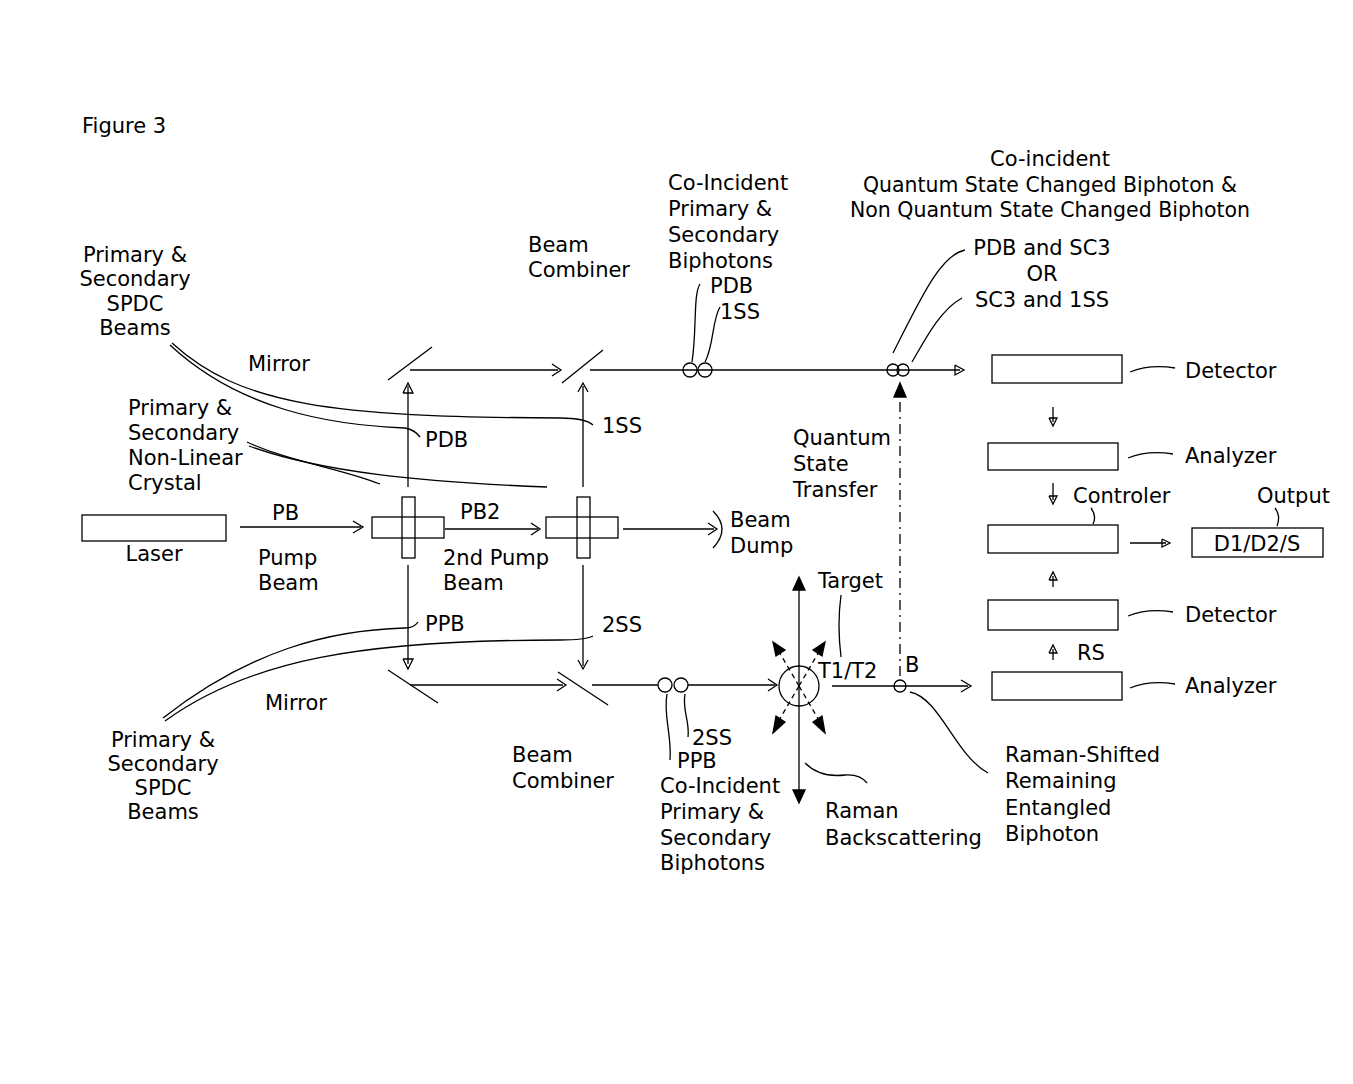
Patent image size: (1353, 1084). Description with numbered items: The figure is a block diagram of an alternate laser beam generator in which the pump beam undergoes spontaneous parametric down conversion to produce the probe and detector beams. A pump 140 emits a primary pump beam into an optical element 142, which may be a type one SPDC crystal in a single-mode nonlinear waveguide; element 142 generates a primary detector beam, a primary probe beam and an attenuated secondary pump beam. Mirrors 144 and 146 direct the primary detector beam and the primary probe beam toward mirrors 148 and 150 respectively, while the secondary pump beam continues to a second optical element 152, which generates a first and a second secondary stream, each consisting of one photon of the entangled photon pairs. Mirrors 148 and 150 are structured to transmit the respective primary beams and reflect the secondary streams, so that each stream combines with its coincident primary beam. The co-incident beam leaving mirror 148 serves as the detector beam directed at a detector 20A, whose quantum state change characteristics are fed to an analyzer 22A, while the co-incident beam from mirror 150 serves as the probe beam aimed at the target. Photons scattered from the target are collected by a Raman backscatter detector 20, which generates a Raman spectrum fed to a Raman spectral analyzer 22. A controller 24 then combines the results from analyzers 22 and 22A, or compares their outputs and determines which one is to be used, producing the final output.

The pump 140 is at (154, 528).
The optical element 142 is at (402, 524).
The mirror 144 is at (312, 367).
The mirror 146 is at (327, 704).
The mirror 148 is at (565, 287).
The mirror 150 is at (580, 760).
The second optical element 152 is at (576, 524).
The detector 20A is at (1057, 369).
The analyzer 22A is at (1053, 456).
The controller 24 is at (1053, 539).
The Raman spectral analyzer 22 is at (1053, 615).
The Raman backscatter detector 20 is at (1057, 686).